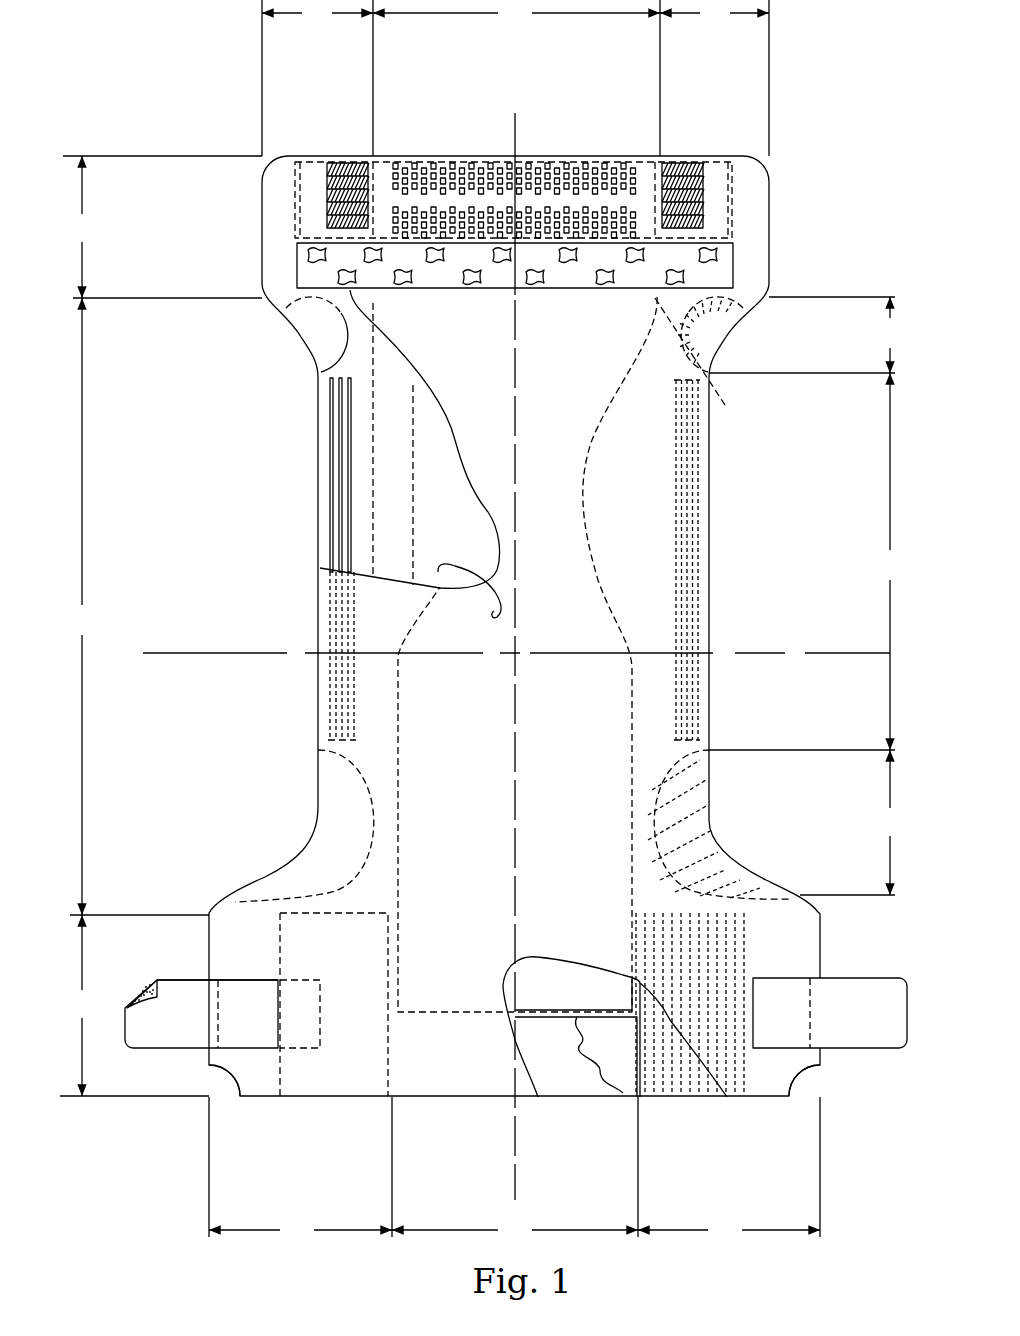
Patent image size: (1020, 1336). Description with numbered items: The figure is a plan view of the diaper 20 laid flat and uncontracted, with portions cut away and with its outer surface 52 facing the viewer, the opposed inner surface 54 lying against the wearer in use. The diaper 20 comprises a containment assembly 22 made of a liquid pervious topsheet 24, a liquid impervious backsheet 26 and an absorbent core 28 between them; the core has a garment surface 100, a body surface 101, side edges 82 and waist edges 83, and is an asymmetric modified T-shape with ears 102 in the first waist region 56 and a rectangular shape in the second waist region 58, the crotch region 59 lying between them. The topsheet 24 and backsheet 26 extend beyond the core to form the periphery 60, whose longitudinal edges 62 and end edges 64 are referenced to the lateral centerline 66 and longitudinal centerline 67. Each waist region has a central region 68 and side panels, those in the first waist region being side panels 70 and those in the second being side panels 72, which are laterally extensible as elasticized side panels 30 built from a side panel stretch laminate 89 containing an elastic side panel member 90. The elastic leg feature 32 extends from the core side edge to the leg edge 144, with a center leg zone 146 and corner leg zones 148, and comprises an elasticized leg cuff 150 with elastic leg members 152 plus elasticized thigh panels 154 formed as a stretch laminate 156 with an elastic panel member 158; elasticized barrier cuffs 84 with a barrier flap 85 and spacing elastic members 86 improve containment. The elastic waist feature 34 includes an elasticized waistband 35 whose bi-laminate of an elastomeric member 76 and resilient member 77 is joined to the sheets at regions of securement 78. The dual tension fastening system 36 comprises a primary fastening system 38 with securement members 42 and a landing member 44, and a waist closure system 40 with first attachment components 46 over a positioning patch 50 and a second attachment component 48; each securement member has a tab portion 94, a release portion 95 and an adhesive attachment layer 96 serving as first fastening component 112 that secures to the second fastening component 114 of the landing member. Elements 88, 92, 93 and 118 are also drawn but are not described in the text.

The diaper 20 is at (205, 378).
The containment assembly 22 is at (410, 439).
The topsheet 24 is at (433, 517).
The backsheet 26 is at (653, 445).
The absorbent core 28 is at (469, 540).
The elasticized side panels 30 is at (363, 1052).
The elastic leg feature 32 is at (335, 528).
The elastic waist feature 34 is at (514, 616).
The elasticized waistband 35 is at (550, 200).
The dual tension fastening system 36 is at (484, 686).
The primary fastening system 38 is at (416, 614).
The waist closure system 40 is at (484, 686).
The securement members 42 is at (170, 985).
The landing member 44 is at (318, 275).
The first attachment components 46 is at (327, 205).
The second attachment component 48 is at (250, 1077).
The positioning patch 50 is at (295, 193).
The outer surface 52 is at (385, 740).
The inner surface 54 is at (318, 668).
The first waist region 56 is at (162, 227).
The second waist region 58 is at (134, 1005).
The crotch region 59 is at (81, 606).
The periphery 60 is at (648, 1097).
The longitudinal edges 62 is at (318, 693).
The end edges 64 is at (488, 156).
The lateral centerline 66 is at (190, 653).
The longitudinal centerline 67 is at (517, 1113).
The central region 68 is at (514, 622).
The side panels 70 is at (515, 78).
The side panels 72 is at (514, 1231).
The elastomeric member 76 is at (577, 1040).
The resilient member 77 is at (577, 1040).
The regions of securement 78 is at (413, 208).
The side edges 82 is at (590, 560).
The waist edges 83 is at (517, 967).
The elasticized barrier cuffs 84 is at (395, 490).
The barrier flap 85 is at (372, 480).
The spacing elastic members 86 is at (410, 520).
The ear flap 88 is at (233, 963).
The side panel stretch laminate 89 is at (700, 1013).
The elastic side panel member 90 is at (340, 1050).
The tape tab 92 is at (165, 1035).
The proximal edge 93 is at (230, 990).
The tab portion 94 is at (200, 990).
The release portion 95 is at (293, 1050).
The adhesive attachment layer 96 is at (247, 1001).
The garment surface 100 is at (617, 993).
The body surface 101 is at (469, 599).
The ears 102 is at (370, 305).
The first fastening component 112 is at (157, 997).
The second fastening component 114 is at (705, 278).
The landing member pattern 118 is at (436, 258).
The leg edge 144 is at (318, 640).
The center leg zone 146 is at (890, 561).
The corner leg zones 148 is at (810, 596).
The elasticized leg cuff 150 is at (340, 625).
The elastic leg members 152 is at (337, 560).
The elasticized thigh panels 154 is at (327, 332).
The stretch laminate 156 is at (742, 317).
The elastic panel member 158 is at (327, 347).